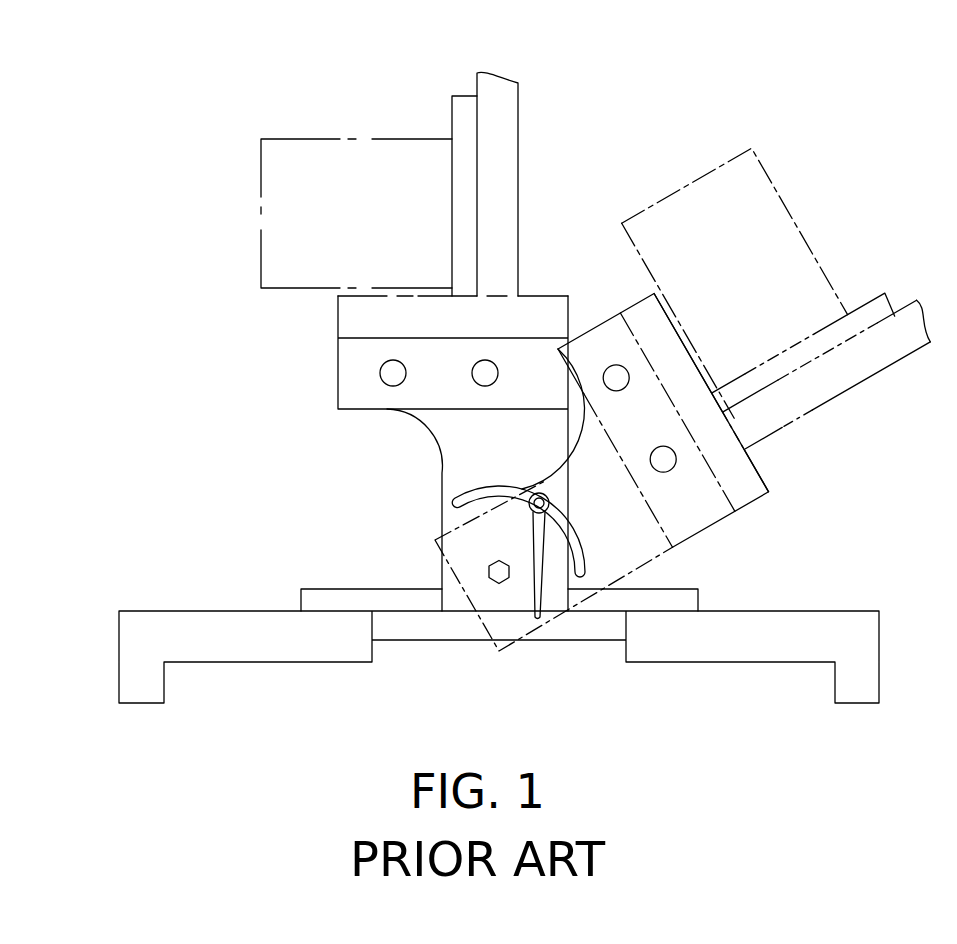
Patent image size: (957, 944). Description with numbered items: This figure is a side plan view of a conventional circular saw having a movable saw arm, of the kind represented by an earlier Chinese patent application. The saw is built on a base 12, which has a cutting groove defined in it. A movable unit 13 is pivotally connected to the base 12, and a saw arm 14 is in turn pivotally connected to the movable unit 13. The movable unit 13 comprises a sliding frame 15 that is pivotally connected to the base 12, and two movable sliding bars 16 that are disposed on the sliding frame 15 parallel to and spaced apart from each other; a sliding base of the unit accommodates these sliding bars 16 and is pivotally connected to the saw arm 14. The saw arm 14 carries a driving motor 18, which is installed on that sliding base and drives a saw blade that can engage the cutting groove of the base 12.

The base 12 is at (253, 651).
The movable unit 13 is at (310, 413).
The saw arm 14 is at (513, 68).
The sliding frame 15 is at (455, 476).
The movable sliding bars 16 is at (388, 371).
The driving motor 18 is at (397, 152).